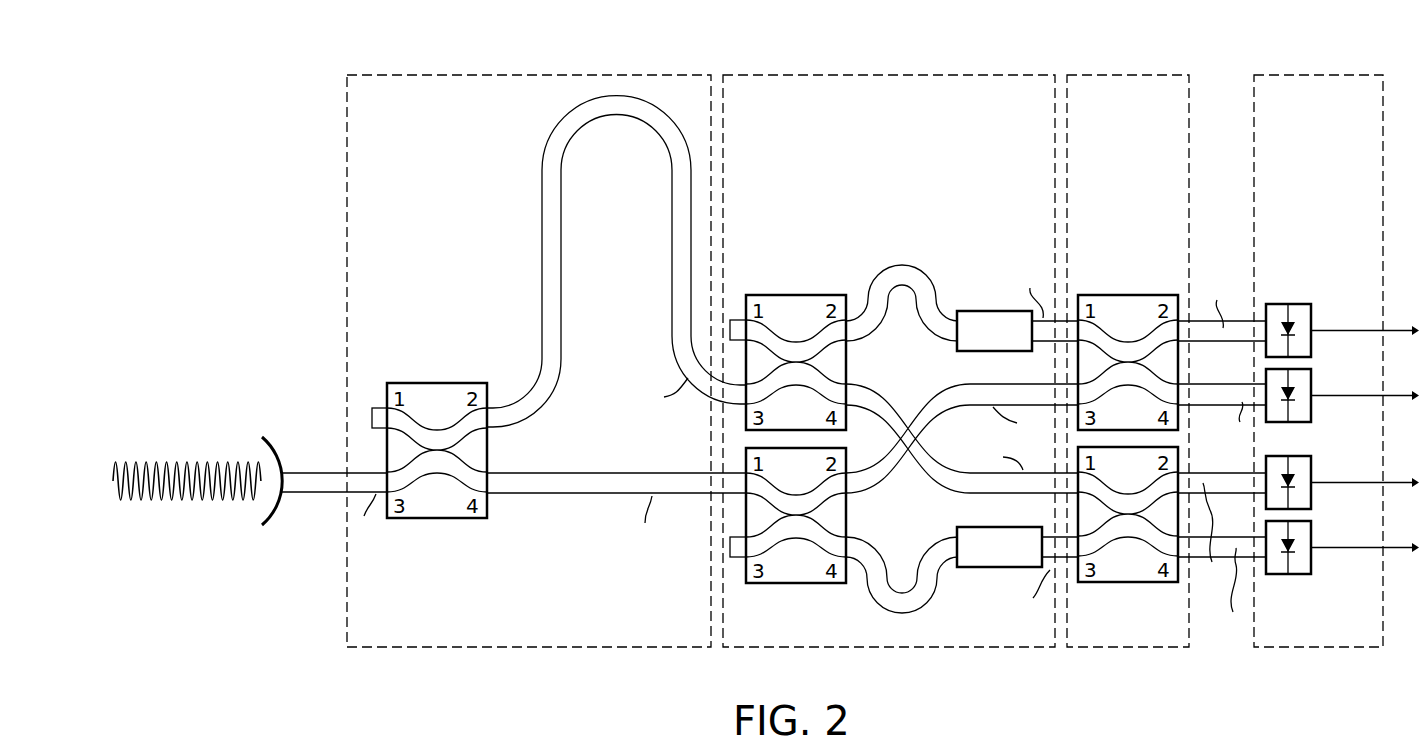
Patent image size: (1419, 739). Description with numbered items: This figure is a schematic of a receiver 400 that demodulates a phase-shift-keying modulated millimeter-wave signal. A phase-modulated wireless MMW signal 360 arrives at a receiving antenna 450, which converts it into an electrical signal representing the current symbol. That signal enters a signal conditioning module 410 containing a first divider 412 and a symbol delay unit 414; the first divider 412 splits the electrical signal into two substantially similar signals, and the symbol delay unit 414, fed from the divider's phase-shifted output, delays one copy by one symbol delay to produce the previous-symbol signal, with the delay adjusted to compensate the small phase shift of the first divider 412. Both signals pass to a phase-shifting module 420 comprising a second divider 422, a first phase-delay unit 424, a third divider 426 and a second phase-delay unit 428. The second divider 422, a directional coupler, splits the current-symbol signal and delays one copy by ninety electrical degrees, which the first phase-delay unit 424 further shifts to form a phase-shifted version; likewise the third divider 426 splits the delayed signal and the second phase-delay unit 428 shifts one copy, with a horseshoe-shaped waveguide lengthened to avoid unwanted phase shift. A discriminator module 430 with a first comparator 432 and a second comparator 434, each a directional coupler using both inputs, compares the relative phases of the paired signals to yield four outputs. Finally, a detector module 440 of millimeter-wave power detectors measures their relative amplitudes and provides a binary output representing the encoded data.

The phase-modulated wireless MMW signal 360 is at (192, 514).
The receiver 400 is at (298, 96).
The signal conditioning module 410 is at (527, 75).
The first divider 412 is at (438, 518).
The symbol delay unit 414 is at (525, 178).
The phase-shifting module 420 is at (872, 75).
The second divider 422 is at (776, 584).
The first phase-delay unit 424 is at (968, 567).
The third divider 426 is at (797, 295).
The second phase-delay unit 428 is at (970, 311).
The discriminator module 430 is at (1120, 75).
The first comparator 432 is at (1128, 295).
The second comparator 434 is at (1103, 582).
The detector module 440 is at (1310, 75).
The receiving antenna 450 is at (265, 526).